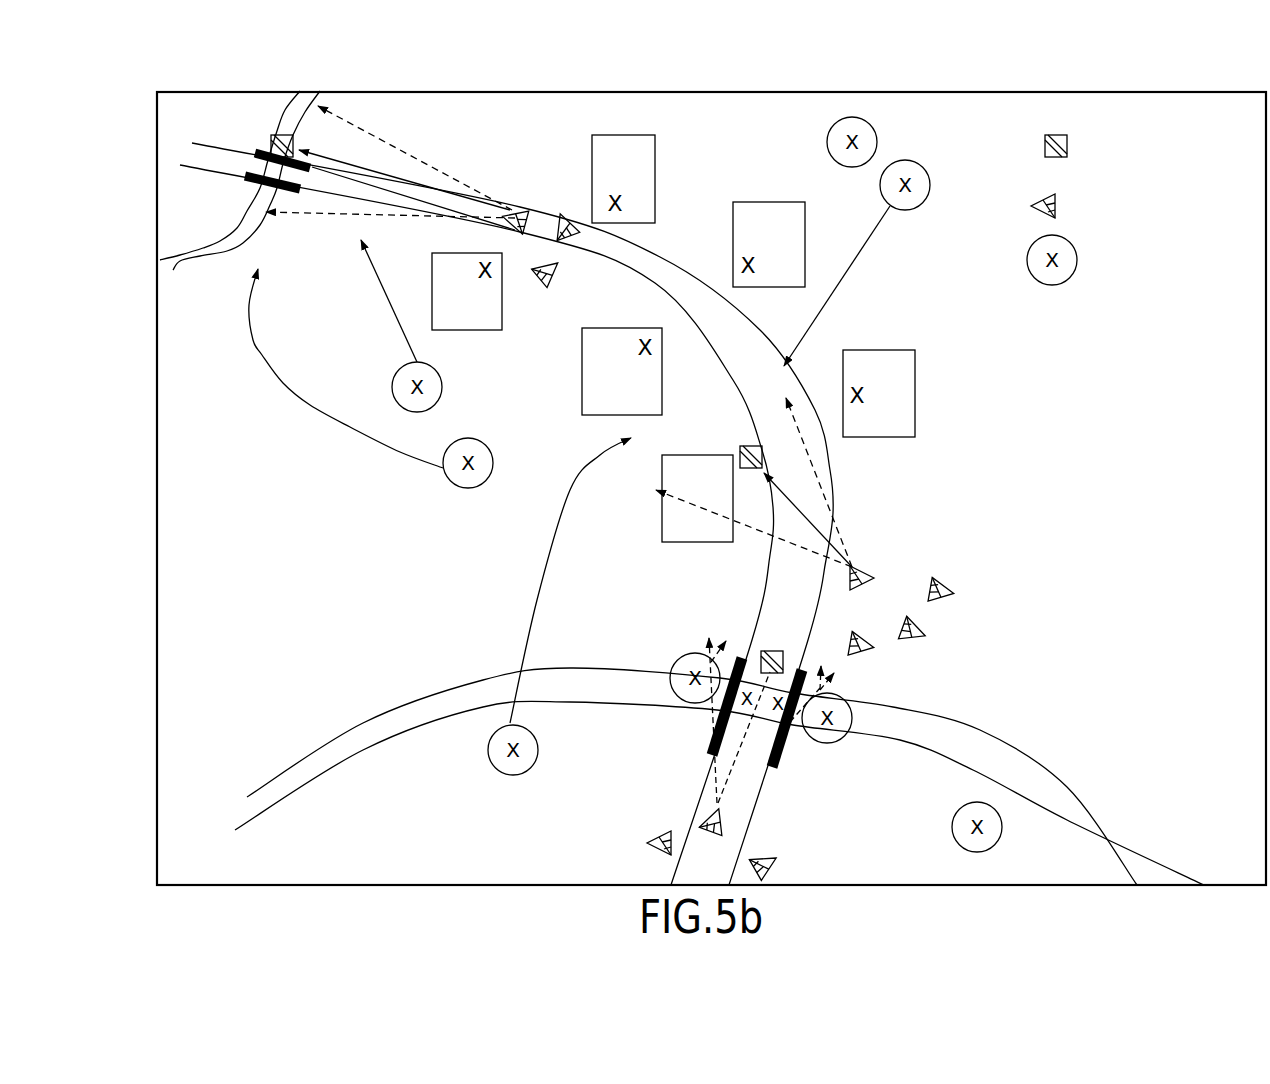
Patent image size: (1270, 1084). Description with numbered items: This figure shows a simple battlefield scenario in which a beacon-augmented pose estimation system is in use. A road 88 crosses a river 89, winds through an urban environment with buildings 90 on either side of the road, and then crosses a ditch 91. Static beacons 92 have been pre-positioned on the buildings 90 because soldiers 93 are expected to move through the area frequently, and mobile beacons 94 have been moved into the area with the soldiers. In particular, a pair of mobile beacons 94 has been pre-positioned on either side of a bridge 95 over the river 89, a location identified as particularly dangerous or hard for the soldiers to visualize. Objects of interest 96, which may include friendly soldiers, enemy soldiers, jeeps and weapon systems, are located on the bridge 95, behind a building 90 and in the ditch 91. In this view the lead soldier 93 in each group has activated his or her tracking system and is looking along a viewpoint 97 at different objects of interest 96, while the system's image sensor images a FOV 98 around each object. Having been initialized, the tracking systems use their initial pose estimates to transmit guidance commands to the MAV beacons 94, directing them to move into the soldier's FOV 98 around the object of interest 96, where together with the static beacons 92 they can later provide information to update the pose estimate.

The road 88 is at (757, 322).
The river 89 is at (977, 732).
The building 90 is at (662, 527).
The ditch 91 is at (223, 252).
The static beacon 92 is at (1118, 332).
The soldier 93 is at (1114, 206).
The mobile beacon 94 is at (1132, 260).
The bridge 95 is at (710, 745).
The object of interest 96 is at (1126, 146).
The viewpoint 97 is at (800, 512).
The FOV 98 is at (813, 470).